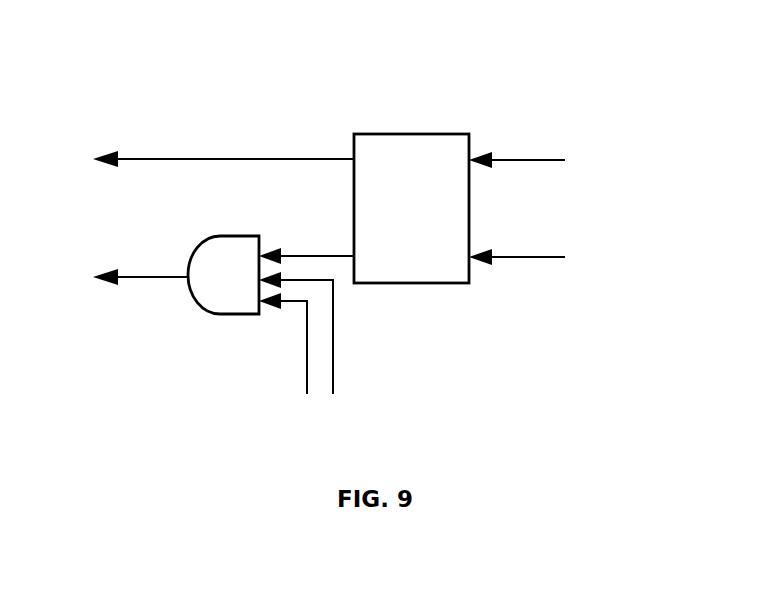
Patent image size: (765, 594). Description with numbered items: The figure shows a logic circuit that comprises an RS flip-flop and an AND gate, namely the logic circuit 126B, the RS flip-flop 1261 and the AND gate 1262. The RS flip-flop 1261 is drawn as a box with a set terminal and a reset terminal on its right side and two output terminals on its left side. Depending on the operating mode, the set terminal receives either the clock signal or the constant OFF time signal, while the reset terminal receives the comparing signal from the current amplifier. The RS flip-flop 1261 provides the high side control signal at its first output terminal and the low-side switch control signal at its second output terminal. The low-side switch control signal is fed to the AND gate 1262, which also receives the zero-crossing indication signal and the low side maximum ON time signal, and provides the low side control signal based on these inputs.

The logic circuit 126B is at (366, 226).
The RS flip-flop 1261 is at (420, 284).
The AND gate 1262 is at (223, 314).